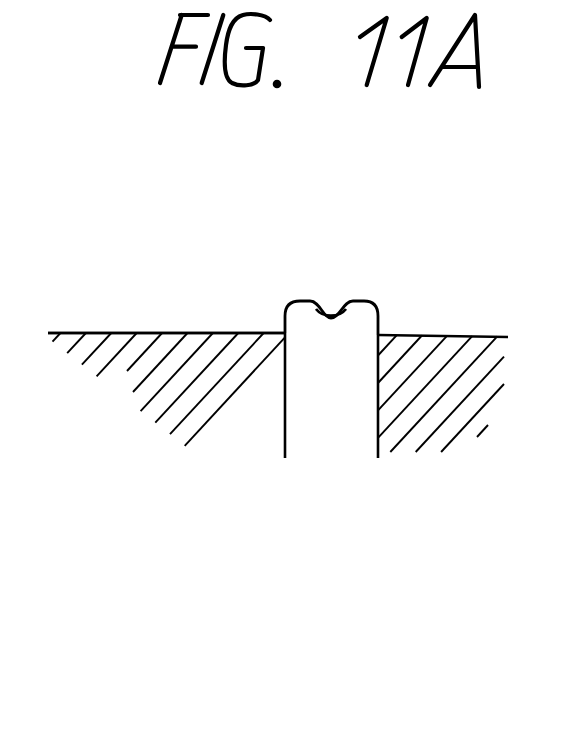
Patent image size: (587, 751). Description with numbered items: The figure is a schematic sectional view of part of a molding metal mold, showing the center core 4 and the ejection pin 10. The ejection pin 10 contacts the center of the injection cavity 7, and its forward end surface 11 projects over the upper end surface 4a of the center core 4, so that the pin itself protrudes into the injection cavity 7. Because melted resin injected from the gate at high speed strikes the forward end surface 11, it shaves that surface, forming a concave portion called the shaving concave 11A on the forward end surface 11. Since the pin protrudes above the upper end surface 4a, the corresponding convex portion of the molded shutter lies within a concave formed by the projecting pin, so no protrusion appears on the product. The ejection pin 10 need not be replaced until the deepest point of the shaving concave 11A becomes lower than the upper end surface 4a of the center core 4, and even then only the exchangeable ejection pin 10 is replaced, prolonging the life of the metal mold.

The center core 4 is at (137, 420).
The upper end surface of the center core 4a is at (229, 333).
The injection cavity 7 is at (140, 277).
The ejection pin 10 is at (330, 420).
The forward end surface 11 is at (380, 317).
The shaving concave 11A is at (348, 280).